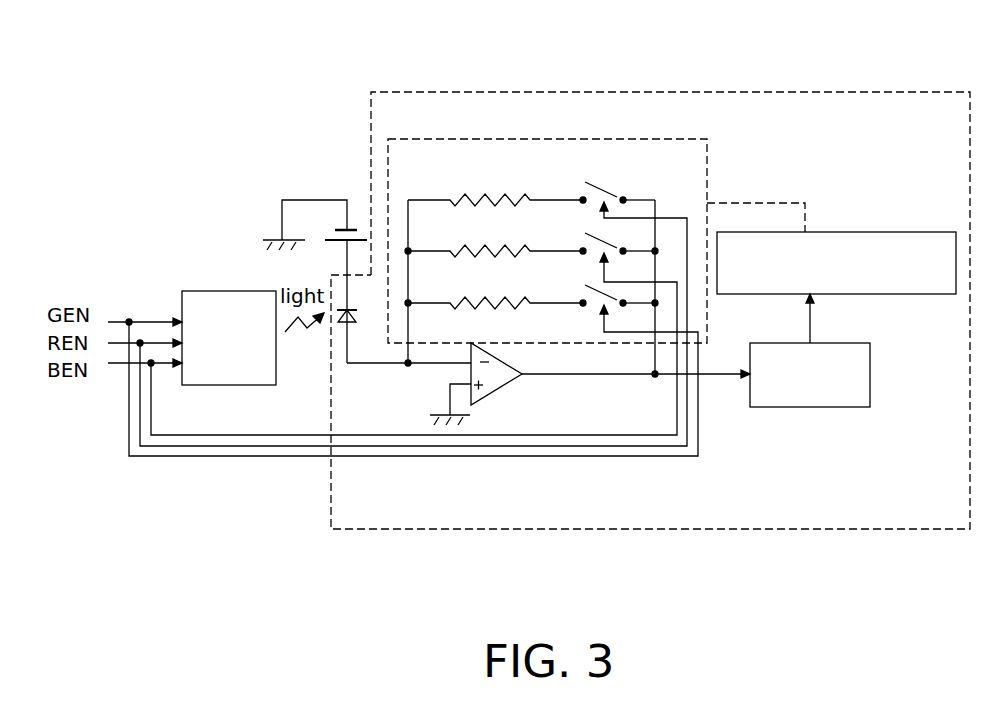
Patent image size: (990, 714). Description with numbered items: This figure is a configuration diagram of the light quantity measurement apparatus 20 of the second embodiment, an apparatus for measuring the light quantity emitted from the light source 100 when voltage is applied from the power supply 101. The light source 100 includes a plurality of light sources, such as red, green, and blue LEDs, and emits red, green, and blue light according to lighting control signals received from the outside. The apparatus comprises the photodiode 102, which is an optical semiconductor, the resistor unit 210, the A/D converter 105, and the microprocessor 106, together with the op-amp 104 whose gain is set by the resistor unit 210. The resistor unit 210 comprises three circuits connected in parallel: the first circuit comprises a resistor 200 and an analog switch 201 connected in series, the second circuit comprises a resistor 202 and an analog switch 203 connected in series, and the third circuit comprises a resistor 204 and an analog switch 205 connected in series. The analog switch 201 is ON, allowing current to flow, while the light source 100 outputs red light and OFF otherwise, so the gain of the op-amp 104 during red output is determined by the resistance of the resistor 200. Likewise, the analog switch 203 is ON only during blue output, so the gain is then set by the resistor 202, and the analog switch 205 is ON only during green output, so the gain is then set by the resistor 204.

The light quantity measurement apparatus 20 is at (793, 92).
The light source 100 is at (193, 291).
The power supply 101 is at (363, 228).
The photodiode 102 is at (353, 332).
The op-amp 104 is at (502, 395).
The A/D converter 105 is at (875, 383).
The microprocessor 106 is at (845, 218).
The resistor 200 is at (468, 192).
The analog switch 201 is at (605, 180).
The resistor 202 is at (468, 240).
The analog switch 203 is at (613, 240).
The resistor 204 is at (468, 293).
The analog switch 205 is at (595, 310).
The resistor unit 210 is at (403, 138).